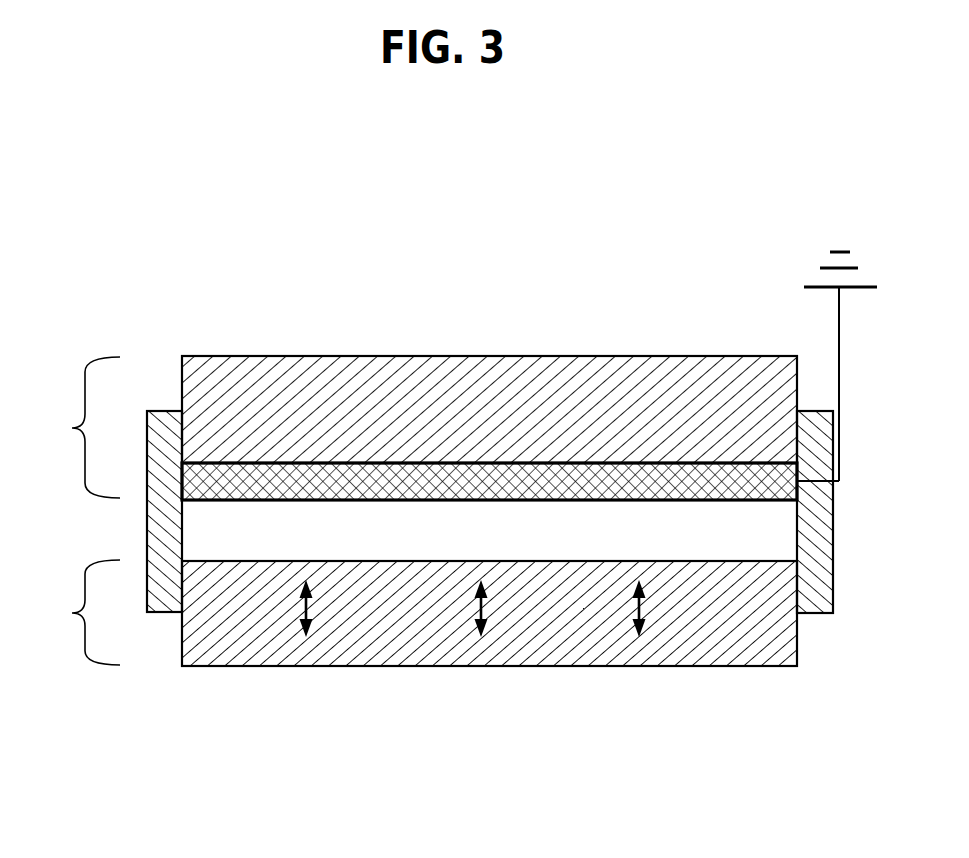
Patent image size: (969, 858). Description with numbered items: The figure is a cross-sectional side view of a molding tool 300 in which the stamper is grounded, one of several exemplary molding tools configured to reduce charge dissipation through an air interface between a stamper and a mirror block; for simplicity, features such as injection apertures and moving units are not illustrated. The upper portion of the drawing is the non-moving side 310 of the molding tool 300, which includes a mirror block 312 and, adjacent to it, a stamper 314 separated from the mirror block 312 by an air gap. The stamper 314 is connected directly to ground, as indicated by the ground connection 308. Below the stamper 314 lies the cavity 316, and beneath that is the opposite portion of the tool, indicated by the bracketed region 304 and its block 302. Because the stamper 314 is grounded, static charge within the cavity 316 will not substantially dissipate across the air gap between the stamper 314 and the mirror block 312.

The molding tool 300 is at (488, 245).
The lower electrode block 302 is at (264, 645).
The lower assembly 304 is at (72, 613).
The ground connection 308 is at (838, 312).
The non-moving side 310 is at (72, 428).
The mirror block 312 is at (412, 427).
The stamper 314 is at (280, 470).
The cavity 316 is at (701, 543).